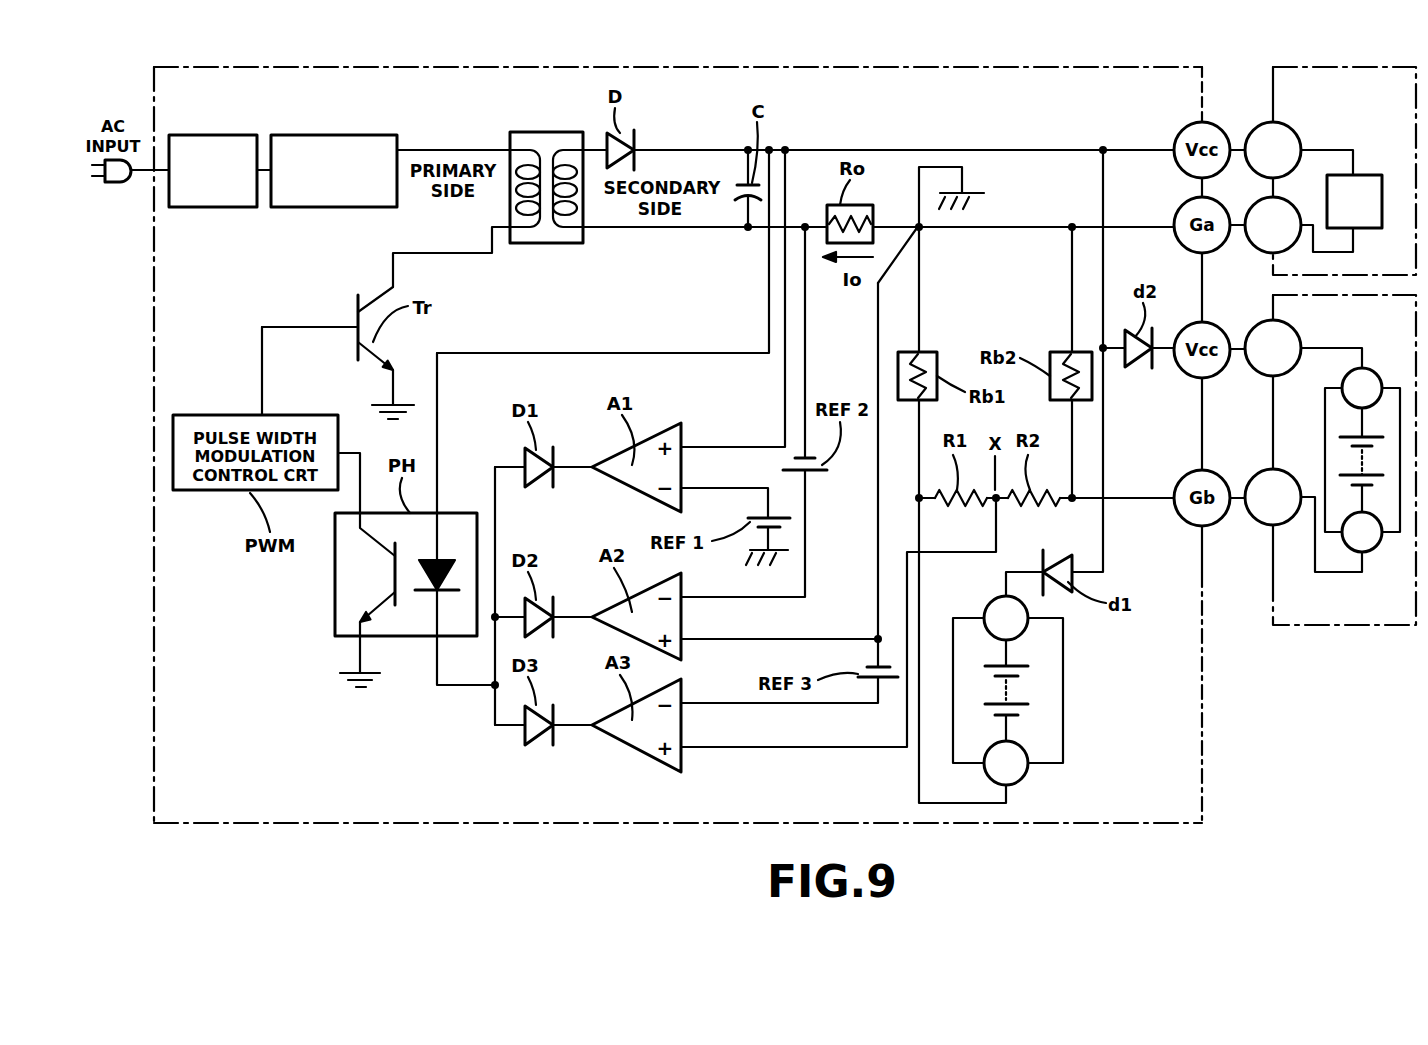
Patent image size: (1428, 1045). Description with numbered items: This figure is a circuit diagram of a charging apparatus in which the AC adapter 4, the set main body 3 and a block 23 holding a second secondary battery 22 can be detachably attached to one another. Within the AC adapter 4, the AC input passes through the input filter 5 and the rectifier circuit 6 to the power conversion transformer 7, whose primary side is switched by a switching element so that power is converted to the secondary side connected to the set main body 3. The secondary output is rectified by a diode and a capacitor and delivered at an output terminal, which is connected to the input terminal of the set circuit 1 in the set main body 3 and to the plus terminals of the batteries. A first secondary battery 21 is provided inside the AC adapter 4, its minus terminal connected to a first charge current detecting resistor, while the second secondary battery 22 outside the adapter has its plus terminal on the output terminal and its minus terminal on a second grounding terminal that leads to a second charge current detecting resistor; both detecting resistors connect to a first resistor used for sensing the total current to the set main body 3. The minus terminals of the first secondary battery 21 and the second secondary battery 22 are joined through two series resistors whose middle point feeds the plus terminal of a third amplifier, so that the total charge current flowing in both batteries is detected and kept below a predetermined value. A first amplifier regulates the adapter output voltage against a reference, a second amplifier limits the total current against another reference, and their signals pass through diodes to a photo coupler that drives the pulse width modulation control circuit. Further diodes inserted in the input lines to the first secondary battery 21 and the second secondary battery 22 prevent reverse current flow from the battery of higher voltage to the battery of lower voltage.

The set circuit 1 is at (1372, 175).
The set main body 3 is at (1344, 148).
The AC adapter 4 is at (760, 67).
The input filter 5 is at (207, 135).
The rectifier circuit 6 is at (312, 135).
The power conversion transformer 7 is at (535, 132).
The first secondary battery 21 is at (1063, 722).
The second secondary battery 22 is at (1396, 534).
The block 23 is at (1348, 487).